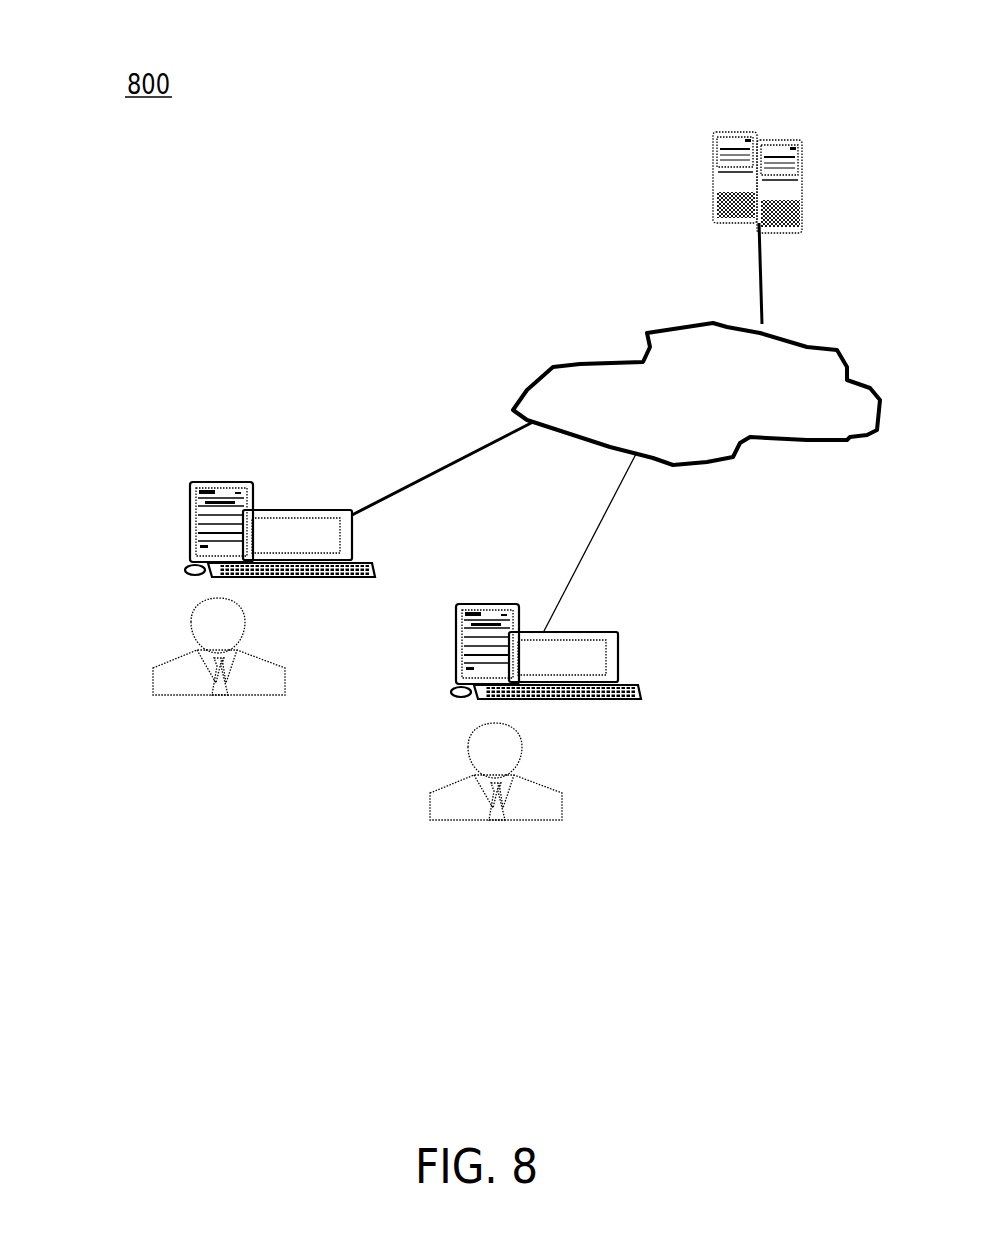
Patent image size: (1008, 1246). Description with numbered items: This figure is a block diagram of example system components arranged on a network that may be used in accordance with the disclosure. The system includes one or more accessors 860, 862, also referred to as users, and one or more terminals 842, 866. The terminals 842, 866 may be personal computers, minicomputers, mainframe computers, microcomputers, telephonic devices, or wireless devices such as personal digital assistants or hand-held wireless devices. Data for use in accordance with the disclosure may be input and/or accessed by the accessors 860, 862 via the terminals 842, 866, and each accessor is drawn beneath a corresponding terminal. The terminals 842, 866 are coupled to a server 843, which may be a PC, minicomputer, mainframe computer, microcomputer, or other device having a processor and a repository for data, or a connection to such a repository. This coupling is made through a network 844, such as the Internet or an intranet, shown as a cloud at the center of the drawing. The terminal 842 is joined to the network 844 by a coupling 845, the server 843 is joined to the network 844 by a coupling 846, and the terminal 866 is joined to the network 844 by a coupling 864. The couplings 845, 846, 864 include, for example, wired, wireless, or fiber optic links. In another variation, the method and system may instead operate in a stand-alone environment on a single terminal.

The terminal 842 is at (205, 488).
The server 843 is at (795, 142).
The network 844 is at (647, 345).
The coupling 845 is at (445, 462).
The coupling 846 is at (757, 273).
The accessor 860 is at (178, 657).
The accessor 862 is at (562, 797).
The coupling 864 is at (593, 532).
The terminal 866 is at (613, 660).